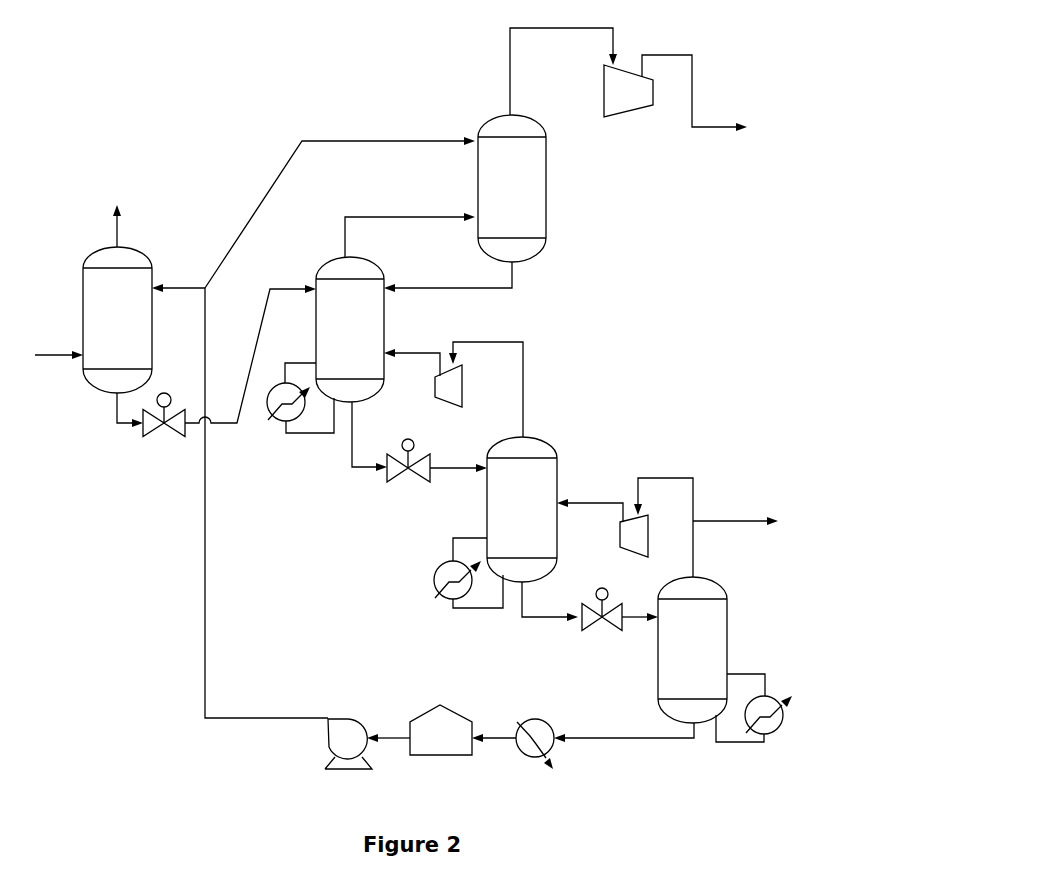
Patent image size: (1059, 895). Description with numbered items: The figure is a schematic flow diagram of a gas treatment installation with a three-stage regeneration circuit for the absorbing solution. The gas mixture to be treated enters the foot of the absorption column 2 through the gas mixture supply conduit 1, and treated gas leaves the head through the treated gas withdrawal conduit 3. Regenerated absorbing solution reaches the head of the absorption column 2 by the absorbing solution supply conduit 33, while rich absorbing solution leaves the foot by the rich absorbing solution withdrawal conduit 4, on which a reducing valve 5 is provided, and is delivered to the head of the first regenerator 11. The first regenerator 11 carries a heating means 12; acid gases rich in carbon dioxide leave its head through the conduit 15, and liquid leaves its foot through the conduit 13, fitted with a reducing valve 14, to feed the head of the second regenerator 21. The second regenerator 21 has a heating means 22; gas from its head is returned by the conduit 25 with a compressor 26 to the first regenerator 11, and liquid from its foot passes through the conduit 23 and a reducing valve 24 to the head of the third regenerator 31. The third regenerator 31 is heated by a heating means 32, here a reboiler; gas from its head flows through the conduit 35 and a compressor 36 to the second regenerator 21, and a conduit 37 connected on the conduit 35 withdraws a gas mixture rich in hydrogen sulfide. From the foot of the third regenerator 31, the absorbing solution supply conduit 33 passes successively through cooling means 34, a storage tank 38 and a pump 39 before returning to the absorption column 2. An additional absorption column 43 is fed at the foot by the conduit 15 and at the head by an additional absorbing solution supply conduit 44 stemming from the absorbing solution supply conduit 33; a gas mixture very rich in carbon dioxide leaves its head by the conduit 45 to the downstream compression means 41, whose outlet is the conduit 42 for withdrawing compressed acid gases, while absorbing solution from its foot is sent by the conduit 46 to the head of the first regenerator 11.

The gas mixture supply conduit 1 is at (52, 355).
The absorption column 2 is at (117, 320).
The treated gas withdrawal conduit 3 is at (120, 212).
The rich absorbing solution withdrawal conduit 4 is at (208, 352).
The reducing valve 5 is at (164, 425).
The first regenerator 11 is at (350, 329).
The heating means 12 is at (300, 410).
The conduit for conveying a liquid 13 is at (369, 436).
The reducing valve 14 is at (437, 476).
The conduit for withdrawing acid gases 15 is at (410, 223).
The second regenerator 21 is at (522, 509).
The heating means 22 is at (456, 573).
The conduit for conveying a liquid 23 is at (550, 616).
The reducing valve 24 is at (620, 621).
The conduit for conveying gas 25 is at (504, 389).
The compressor 26 is at (438, 378).
The third regenerator 31 is at (692, 650).
The heating means 32 is at (763, 708).
The absorbing solution supply conduit 33 is at (423, 523).
The cooling means 34 is at (520, 736).
The conduit for conveying gas 35 is at (664, 514).
The compressor 36 is at (616, 528).
The conduit for withdrawing a gas mixture rich in hydrogen sulfide 37 is at (753, 518).
The storage tank 38 is at (419, 717).
The pump 39 is at (348, 729).
The downstream compression means 41 is at (628, 105).
The conduit for withdrawing compressed acid gases 42 is at (694, 107).
The additional absorption column 43 is at (512, 188).
The additional absorbing solution supply conduit 44 is at (340, 198).
The conduit for withdrawing a gas mixture very rich in carbon dioxide 45 is at (563, 71).
The conduit for withdrawing an absorbing solution 46 is at (467, 281).